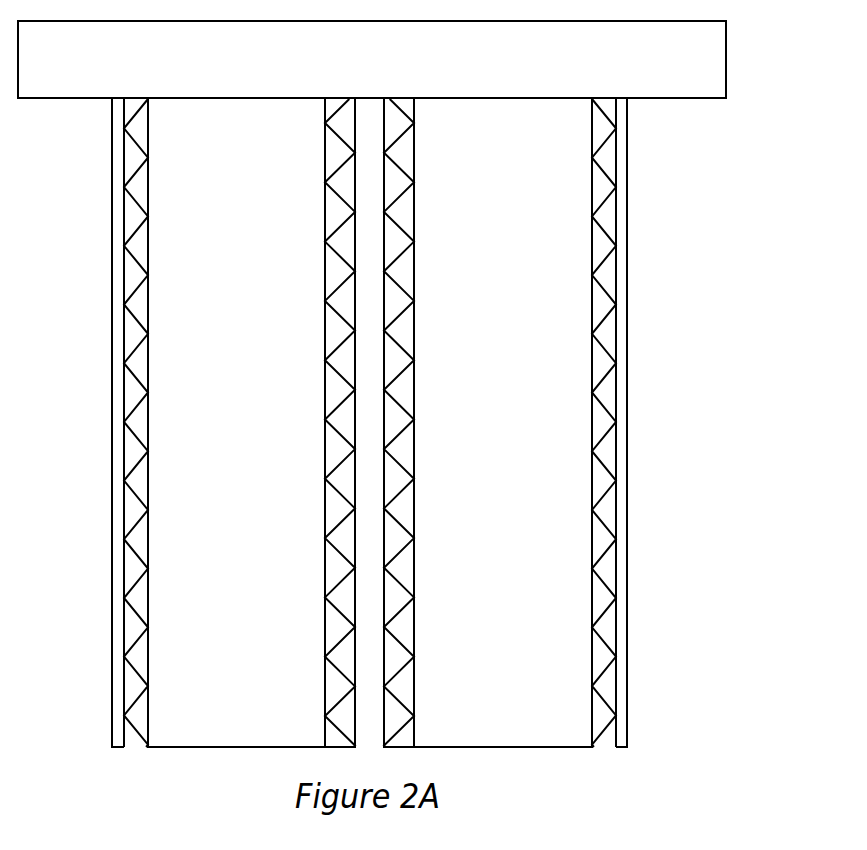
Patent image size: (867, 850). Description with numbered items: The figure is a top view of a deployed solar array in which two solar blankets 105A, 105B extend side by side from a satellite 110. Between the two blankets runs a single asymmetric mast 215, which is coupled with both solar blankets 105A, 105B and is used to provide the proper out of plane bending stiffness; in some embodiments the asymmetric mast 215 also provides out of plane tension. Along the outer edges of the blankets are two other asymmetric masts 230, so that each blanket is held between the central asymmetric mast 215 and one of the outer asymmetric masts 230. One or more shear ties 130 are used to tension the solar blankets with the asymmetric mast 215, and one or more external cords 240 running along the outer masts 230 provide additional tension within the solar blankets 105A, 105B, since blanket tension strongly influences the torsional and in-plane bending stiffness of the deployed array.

The satellite 110 is at (497, 81).
The solar blanket 105A is at (263, 323).
The solar blanket 105B is at (542, 301).
The shear ties 130 is at (398, 580).
The asymmetric mast 215 is at (367, 452).
The asymmetric masts 230 is at (603, 348).
The external cords 240 is at (626, 262).